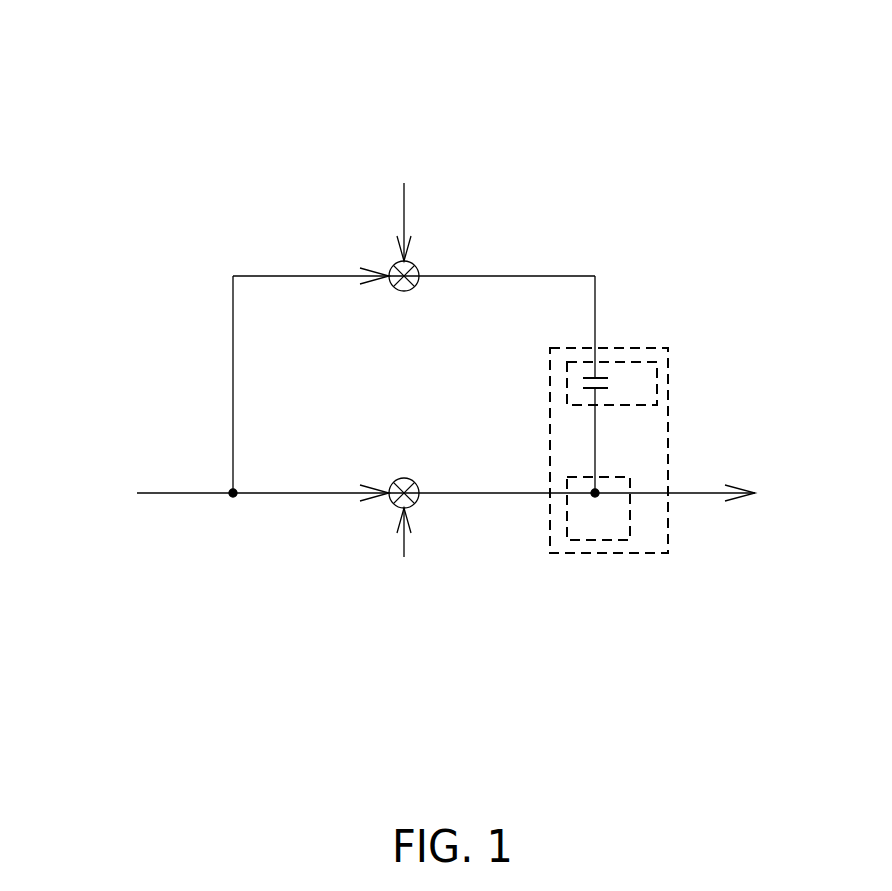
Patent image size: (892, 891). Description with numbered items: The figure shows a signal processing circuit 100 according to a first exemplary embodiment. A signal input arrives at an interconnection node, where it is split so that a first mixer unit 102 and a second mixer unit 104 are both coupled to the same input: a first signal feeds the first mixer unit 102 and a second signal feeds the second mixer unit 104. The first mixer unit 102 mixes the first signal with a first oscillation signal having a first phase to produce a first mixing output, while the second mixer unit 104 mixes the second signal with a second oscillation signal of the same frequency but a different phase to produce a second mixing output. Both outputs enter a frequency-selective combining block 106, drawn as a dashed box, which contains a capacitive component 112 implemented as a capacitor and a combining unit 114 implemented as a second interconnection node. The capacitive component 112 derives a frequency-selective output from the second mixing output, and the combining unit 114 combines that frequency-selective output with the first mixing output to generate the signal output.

The signal processing circuit 100 is at (668, 106).
The first mixer unit 102 is at (396, 480).
The second mixer unit 104 is at (414, 290).
The frequency-selective combining block 106 is at (645, 348).
The capacitive component 112 is at (658, 385).
The combining unit 114 is at (608, 543).